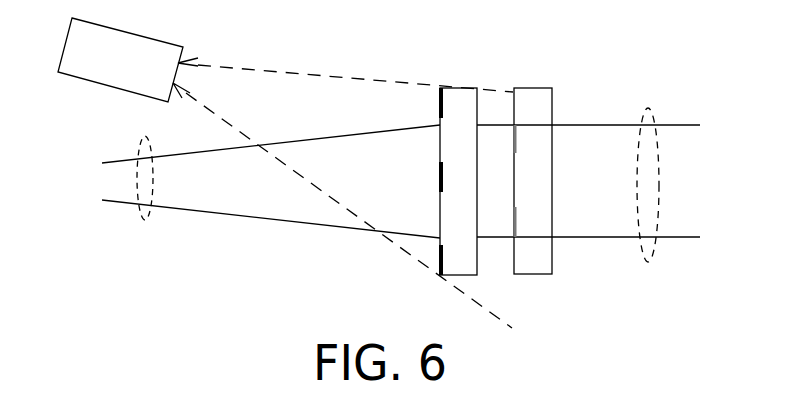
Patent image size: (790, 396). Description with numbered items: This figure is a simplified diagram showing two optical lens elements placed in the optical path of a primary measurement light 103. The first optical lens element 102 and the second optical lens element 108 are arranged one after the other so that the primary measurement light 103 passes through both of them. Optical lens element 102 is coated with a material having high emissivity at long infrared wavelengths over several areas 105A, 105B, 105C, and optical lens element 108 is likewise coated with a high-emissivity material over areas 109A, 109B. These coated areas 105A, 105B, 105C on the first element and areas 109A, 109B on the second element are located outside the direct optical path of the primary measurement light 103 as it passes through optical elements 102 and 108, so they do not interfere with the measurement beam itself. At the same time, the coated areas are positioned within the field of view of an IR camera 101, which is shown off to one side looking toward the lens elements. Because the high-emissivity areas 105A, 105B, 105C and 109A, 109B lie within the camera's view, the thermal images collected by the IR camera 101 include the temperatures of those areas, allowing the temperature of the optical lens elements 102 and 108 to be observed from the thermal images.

The IR camera 101 is at (106, 67).
The optical lens element 102 is at (455, 88).
The primary measurement light 103 is at (148, 225).
The area 105A is at (438, 105).
The area 105B is at (438, 183).
The area 105C is at (438, 262).
The optical lens element 108 is at (531, 88).
The area 109A is at (517, 142).
The area 109B is at (517, 222).